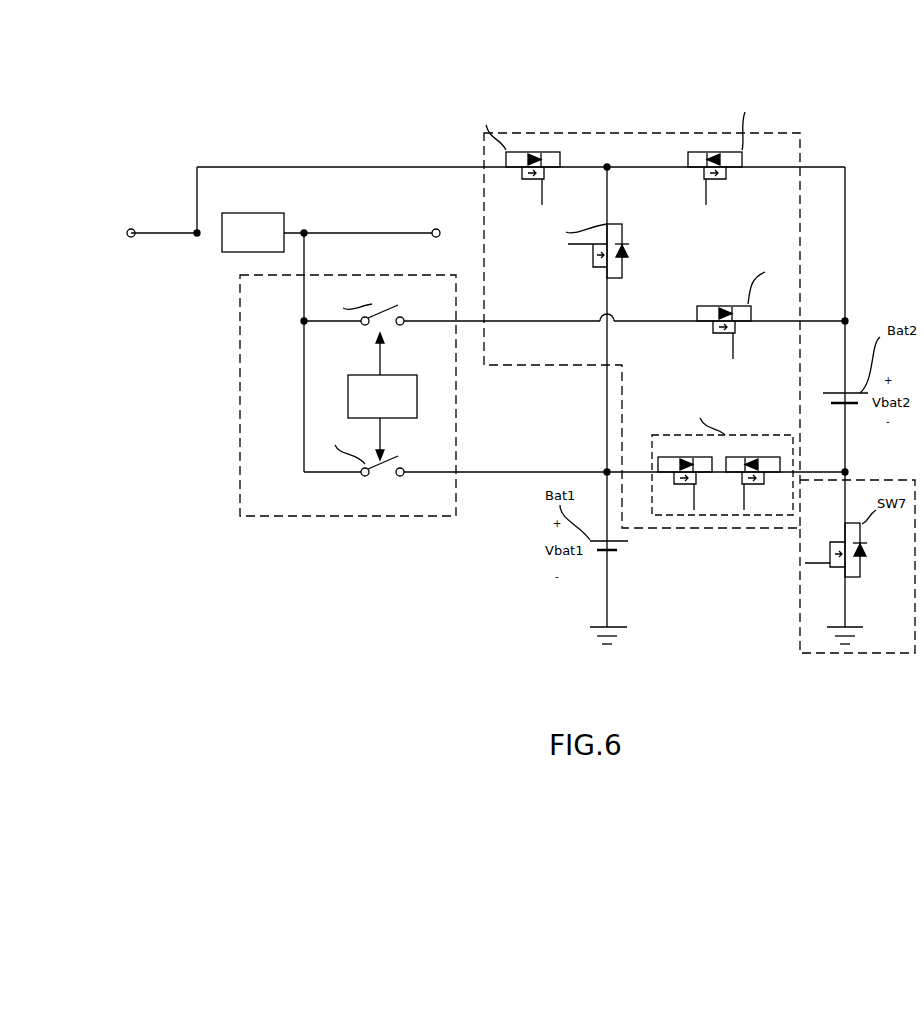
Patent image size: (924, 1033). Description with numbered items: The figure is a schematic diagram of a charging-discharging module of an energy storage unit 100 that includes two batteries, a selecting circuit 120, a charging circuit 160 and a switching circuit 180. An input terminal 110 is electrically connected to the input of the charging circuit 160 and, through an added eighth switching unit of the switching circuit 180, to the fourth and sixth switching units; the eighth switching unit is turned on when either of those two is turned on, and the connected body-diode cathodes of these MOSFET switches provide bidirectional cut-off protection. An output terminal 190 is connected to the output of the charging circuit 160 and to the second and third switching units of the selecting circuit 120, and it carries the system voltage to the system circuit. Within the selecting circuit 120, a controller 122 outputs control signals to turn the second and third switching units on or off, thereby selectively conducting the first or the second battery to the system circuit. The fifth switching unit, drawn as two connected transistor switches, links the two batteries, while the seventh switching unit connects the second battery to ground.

The charging-discharging module of the energy storage unit 100 is at (139, 74).
The input terminal 110 is at (143, 238).
The selecting circuit 120 is at (348, 421).
The controller 122 is at (382, 396).
The charging circuit 160 is at (253, 232).
The switching circuit 180 is at (568, 132).
The output terminal 190 is at (432, 229).